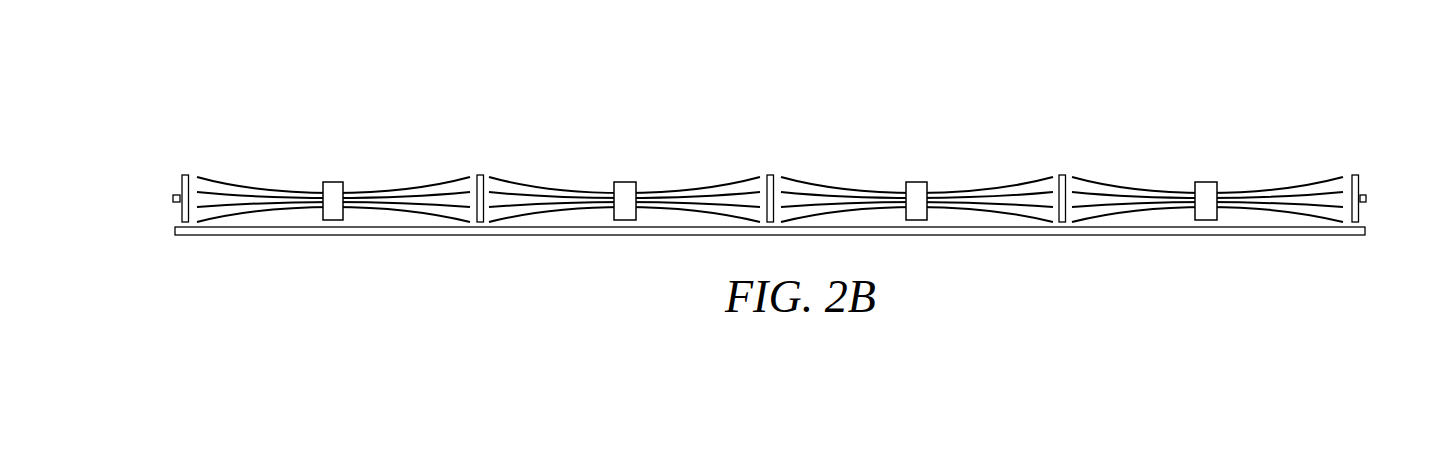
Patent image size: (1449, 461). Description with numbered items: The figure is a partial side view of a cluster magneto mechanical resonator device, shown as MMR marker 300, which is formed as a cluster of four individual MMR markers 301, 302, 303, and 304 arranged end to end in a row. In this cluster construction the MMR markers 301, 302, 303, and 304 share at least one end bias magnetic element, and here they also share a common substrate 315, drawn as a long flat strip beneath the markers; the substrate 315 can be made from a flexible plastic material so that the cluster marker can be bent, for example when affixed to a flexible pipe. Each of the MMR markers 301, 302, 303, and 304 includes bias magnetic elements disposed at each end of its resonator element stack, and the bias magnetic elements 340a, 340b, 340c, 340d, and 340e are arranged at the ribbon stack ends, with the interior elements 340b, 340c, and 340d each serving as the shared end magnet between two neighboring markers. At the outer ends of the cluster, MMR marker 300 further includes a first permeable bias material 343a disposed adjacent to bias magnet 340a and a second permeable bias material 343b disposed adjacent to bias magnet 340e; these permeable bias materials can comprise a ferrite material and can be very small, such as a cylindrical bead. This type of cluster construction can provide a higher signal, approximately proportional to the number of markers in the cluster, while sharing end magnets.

The MMR marker 300 is at (1310, 42).
The MMR marker 301 is at (339, 127).
The MMR marker 302 is at (639, 127).
The MMR marker 303 is at (927, 129).
The MMR marker 304 is at (1229, 129).
The substrate 315 is at (1150, 233).
The bias magnetic element 340a is at (181, 178).
The bias magnetic element 340b is at (479, 173).
The bias magnetic element 340c is at (770, 173).
The bias magnetic element 340d is at (1061, 173).
The bias magnetic element 340e is at (1359, 174).
The first permeable bias material 343a is at (172, 198).
The second permeable bias material 343b is at (1366, 200).